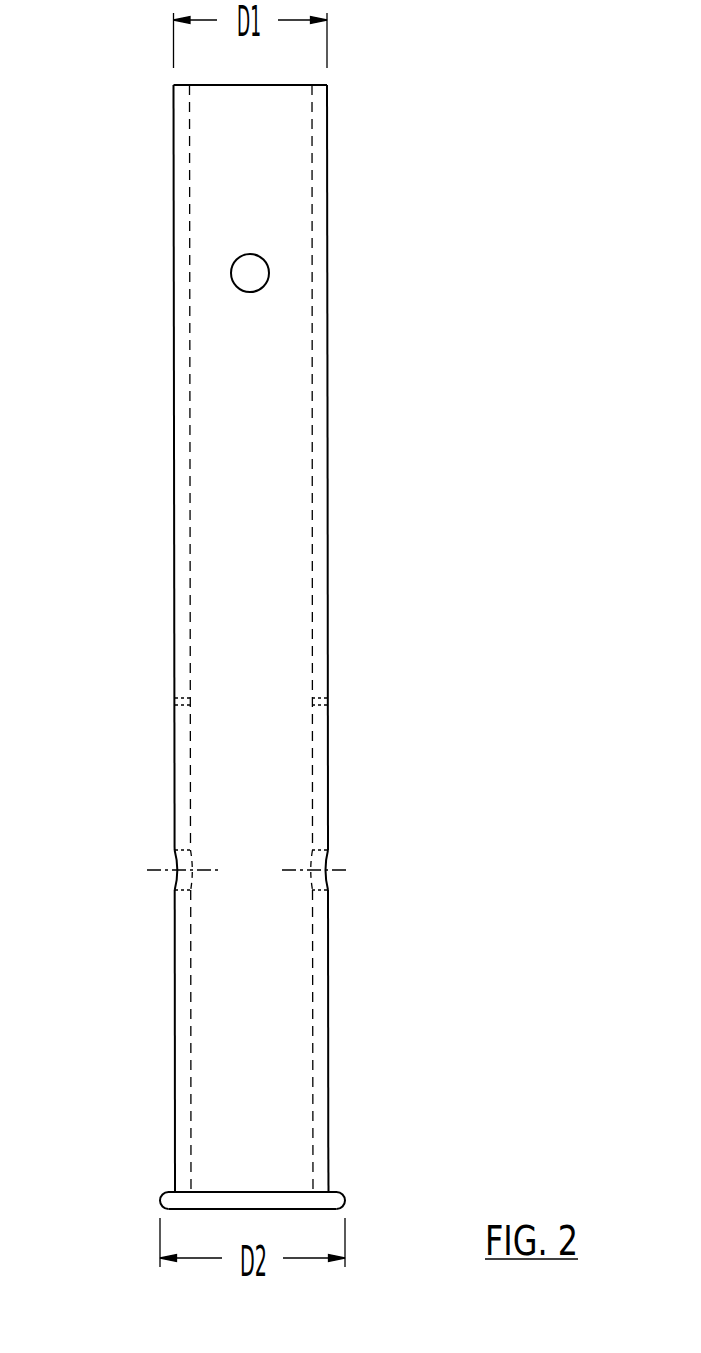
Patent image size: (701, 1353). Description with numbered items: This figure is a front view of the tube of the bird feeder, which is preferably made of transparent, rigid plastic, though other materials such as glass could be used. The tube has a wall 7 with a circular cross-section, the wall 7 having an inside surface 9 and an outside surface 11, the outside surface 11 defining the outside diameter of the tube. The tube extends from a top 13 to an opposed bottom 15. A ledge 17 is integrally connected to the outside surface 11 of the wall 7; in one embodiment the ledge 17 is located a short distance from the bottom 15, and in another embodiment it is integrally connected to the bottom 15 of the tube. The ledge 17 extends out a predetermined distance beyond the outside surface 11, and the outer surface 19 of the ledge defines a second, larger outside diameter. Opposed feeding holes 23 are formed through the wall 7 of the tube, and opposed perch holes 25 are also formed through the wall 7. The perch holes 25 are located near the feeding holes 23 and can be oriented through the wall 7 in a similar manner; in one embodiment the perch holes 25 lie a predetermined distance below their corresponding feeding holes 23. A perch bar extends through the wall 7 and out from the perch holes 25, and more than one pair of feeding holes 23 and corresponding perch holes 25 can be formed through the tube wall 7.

The wall 7 is at (328, 578).
The inside surface 9 is at (313, 432).
The outside surface 11 is at (327, 373).
The top 13 is at (293, 83).
The bottom 15 is at (222, 1209).
The ledge 17 is at (332, 1193).
The outer surface of the ledge 19 is at (160, 1201).
The feeding holes 23 is at (175, 698).
The perch holes 25 is at (328, 870).